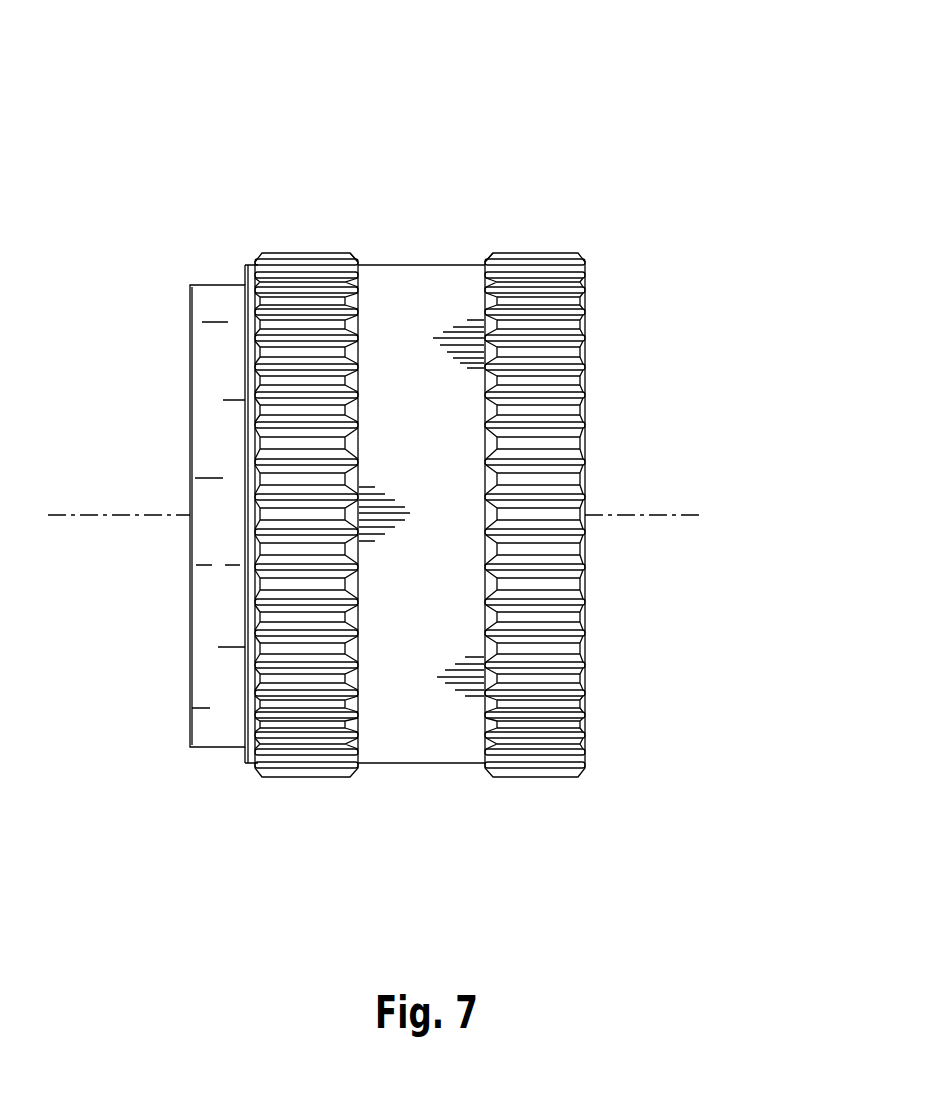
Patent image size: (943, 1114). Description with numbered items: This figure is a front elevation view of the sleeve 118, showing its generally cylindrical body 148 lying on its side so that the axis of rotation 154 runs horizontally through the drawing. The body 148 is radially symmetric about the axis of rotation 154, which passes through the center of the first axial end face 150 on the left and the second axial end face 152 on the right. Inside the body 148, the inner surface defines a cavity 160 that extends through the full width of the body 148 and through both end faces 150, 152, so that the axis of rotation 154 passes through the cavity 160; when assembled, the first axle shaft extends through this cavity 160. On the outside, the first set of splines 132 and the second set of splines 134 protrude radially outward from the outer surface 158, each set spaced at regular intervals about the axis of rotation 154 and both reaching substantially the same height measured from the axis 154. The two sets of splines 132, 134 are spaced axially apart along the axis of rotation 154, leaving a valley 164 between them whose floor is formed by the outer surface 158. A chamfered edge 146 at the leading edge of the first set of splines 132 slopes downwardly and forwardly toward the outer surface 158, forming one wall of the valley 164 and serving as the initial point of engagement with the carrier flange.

The sleeve 118 is at (551, 148).
The first set of splines 132 is at (300, 772).
The second set of splines 134 is at (535, 772).
The chamfered edge 146 is at (357, 257).
The body 148 is at (448, 282).
The first axial end face 150 is at (190, 432).
The second axial end face 152 is at (585, 685).
The axis of rotation 154 is at (685, 513).
The outer surface 158 is at (425, 735).
The cavity 160 is at (603, 378).
The valley 164 is at (412, 307).